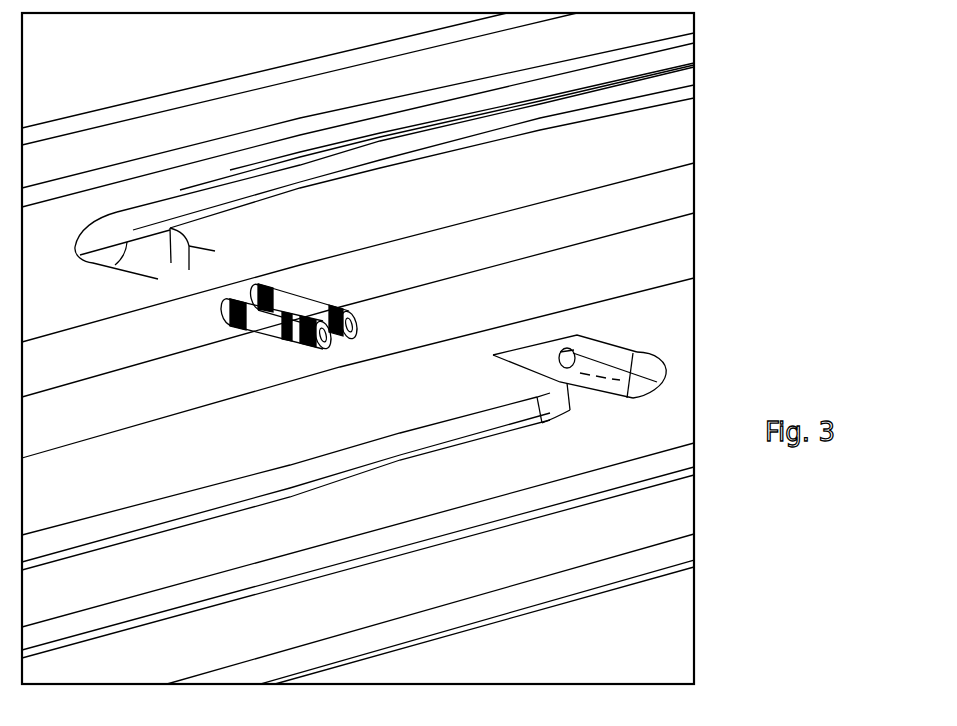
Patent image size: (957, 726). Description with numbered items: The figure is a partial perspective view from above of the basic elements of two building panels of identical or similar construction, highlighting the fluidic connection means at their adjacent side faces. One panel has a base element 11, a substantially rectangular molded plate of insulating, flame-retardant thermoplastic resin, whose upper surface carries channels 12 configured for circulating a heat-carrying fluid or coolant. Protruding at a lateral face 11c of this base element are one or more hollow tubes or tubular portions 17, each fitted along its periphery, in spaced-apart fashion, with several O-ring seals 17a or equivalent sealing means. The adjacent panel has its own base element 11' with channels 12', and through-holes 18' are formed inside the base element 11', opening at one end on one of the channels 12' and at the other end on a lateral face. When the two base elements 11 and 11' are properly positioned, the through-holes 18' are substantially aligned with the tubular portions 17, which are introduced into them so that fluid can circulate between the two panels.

The base element 11 is at (393, 348).
The base element of adjacent panel 11' is at (395, 493).
The lateral face 11c is at (358, 335).
The channels 12 is at (412, 151).
The channels of adjacent panel 12' is at (579, 392).
The hollow tubular portion 17 is at (320, 350).
The O-ring seal 17a is at (317, 303).
The through-hole 18' is at (594, 342).